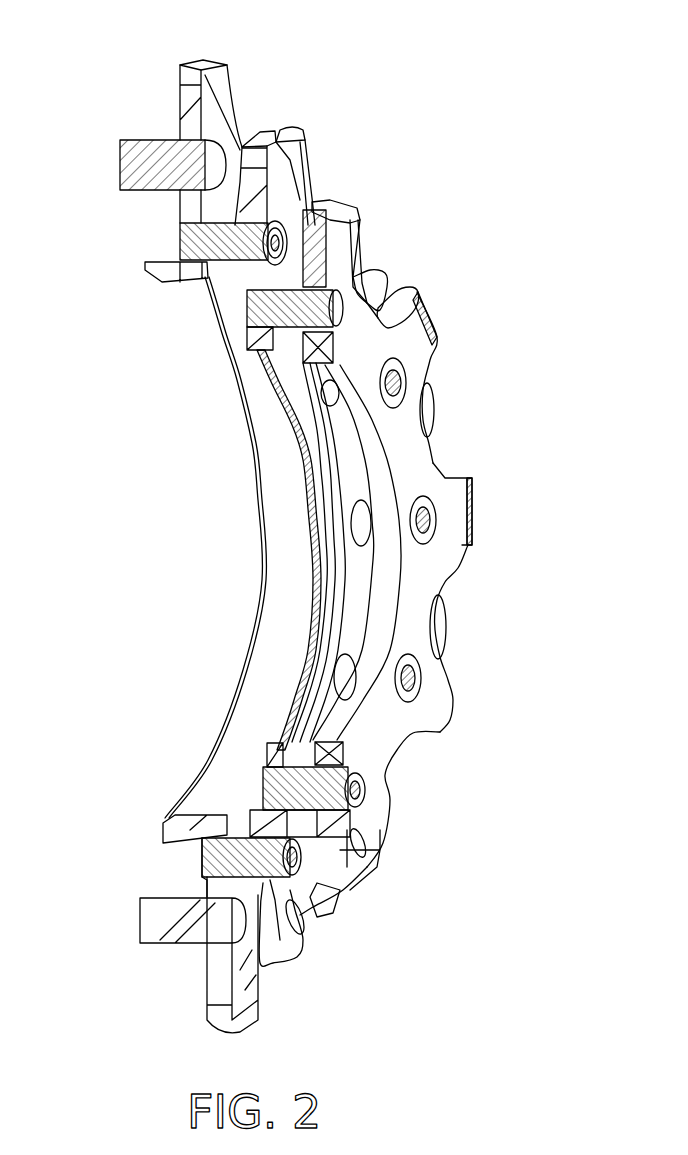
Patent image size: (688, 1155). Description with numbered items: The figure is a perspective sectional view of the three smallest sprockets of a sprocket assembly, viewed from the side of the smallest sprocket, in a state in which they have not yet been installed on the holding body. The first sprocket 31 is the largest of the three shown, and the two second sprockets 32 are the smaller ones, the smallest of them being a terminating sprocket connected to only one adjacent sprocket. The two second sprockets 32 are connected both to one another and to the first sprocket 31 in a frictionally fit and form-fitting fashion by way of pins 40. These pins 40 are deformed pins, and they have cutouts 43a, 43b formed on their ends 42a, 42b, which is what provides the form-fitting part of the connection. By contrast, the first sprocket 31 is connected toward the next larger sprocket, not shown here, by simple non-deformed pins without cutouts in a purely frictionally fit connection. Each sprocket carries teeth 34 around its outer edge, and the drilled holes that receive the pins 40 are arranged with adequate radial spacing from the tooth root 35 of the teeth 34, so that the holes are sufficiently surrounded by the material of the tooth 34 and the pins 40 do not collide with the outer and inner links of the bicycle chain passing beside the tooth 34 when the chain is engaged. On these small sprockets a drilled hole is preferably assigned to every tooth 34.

The first sprocket 31 is at (210, 58).
The second sprocket 32 is at (330, 215).
The tooth 34 is at (470, 520).
The tooth root 35 is at (433, 463).
The pin 40 is at (273, 310).
The end of pin 42a is at (200, 853).
The end of pin 42b is at (297, 850).
The cutout 43a is at (200, 860).
The cutout 43b is at (290, 860).